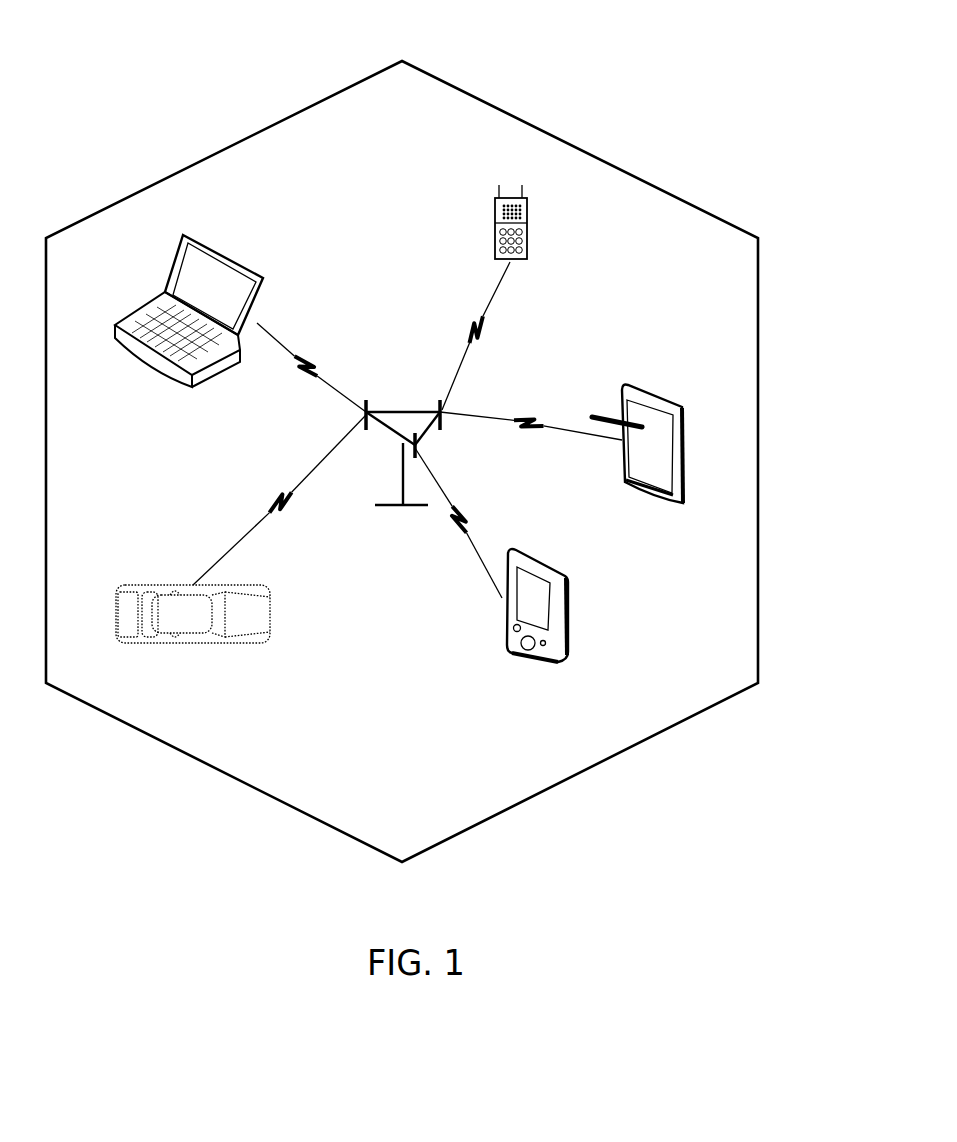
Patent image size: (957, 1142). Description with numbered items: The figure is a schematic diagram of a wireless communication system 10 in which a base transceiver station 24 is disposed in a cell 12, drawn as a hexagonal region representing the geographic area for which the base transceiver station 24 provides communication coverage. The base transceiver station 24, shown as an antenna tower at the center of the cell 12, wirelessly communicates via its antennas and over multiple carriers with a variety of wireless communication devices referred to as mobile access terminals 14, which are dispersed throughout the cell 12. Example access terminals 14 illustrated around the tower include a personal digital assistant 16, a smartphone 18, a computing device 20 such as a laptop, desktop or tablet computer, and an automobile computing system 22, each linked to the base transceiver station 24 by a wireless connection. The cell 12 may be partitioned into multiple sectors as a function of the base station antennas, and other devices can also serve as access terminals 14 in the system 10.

The wireless communication system 10 is at (742, 72).
The cell 12 is at (675, 193).
The mobile access terminal 14 is at (527, 247).
The personal digital assistant 16 is at (630, 385).
The smartphone 18 is at (570, 630).
The computing device 20 is at (140, 308).
The automobile computing system 22 is at (147, 587).
The base transceiver station 24 is at (390, 412).